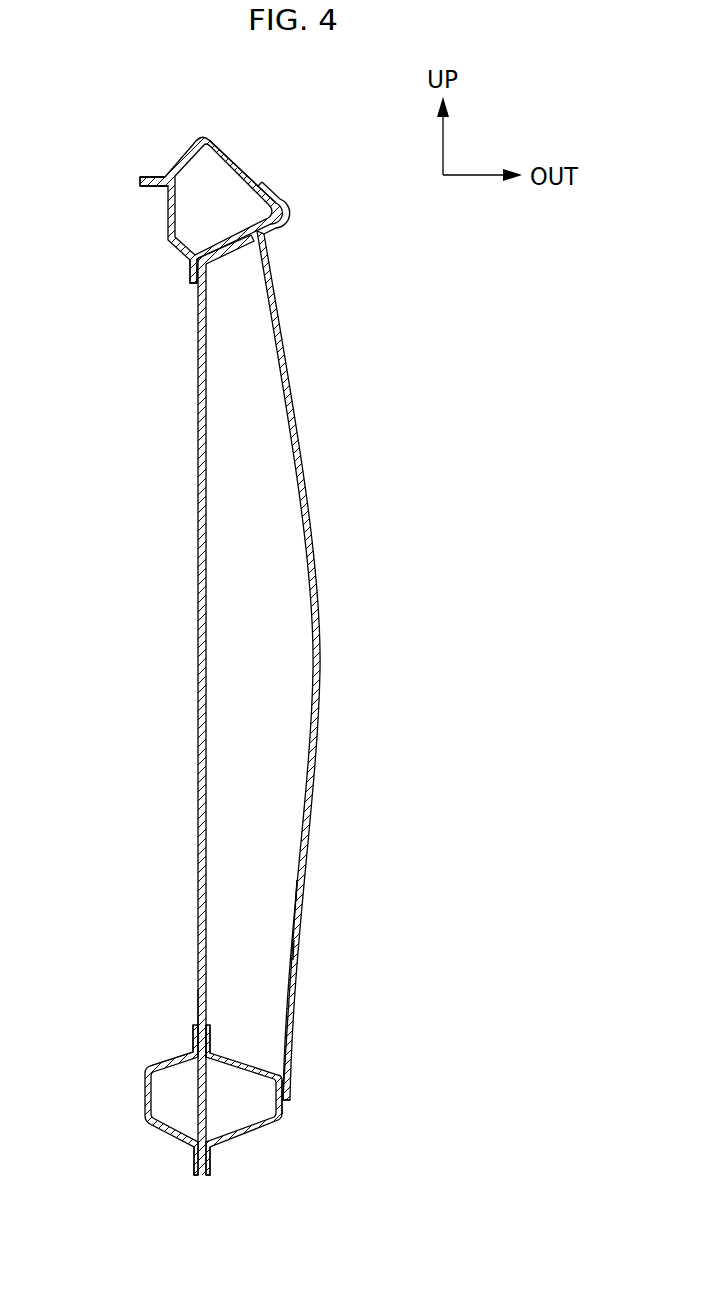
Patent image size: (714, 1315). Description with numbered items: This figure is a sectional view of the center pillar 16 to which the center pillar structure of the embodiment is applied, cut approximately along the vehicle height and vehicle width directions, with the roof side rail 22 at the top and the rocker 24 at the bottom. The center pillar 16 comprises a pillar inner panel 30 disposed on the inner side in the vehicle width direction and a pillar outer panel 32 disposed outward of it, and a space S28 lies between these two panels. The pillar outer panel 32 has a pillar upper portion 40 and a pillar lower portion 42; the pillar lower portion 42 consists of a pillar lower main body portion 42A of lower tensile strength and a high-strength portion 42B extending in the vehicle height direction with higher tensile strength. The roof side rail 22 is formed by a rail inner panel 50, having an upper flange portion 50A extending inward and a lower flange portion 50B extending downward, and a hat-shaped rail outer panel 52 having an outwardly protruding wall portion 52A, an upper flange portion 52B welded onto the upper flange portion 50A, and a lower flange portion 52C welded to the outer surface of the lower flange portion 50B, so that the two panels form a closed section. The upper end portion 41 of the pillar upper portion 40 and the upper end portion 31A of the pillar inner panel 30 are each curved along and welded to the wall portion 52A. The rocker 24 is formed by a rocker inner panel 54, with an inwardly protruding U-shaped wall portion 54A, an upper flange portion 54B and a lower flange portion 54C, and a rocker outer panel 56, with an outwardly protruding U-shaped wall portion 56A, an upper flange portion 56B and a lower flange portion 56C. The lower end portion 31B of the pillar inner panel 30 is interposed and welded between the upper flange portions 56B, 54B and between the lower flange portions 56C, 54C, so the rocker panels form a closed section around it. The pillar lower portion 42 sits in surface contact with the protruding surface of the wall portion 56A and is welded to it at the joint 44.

The center pillar 16 is at (250, 625).
The roof side rail 22 is at (197, 214).
The rocker 24 is at (214, 1089).
The pillar inner panel 30 is at (191, 705).
The upper end portion 31A is at (212, 262).
The lower end portion 31B is at (199, 1005).
The pillar outer panel 32 is at (308, 645).
The pillar upper portion 40 is at (300, 645).
The upper end portion 41 is at (283, 214).
The pillar lower portion 42 is at (300, 978).
The pillar lower main body portion 42A is at (293, 902).
The high-strength portion 42B is at (289, 960).
The joint 44 is at (325, 1093).
The rail inner panel 50 is at (197, 227).
The upper flange portion 50A is at (148, 187).
The lower flange portion 50B is at (188, 274).
The rail outer panel 52 is at (218, 227).
The wall portion 52A is at (246, 170).
The upper flange portion 52B is at (150, 177).
The lower flange portion 52C is at (195, 284).
The rocker inner panel 54 is at (134, 1093).
The wall portion 54A is at (158, 1062).
The upper flange portion 54B is at (193, 1040).
The lower flange portion 54C is at (192, 1163).
The rocker outer panel 56 is at (290, 1089).
The wall portion 56A is at (285, 1116).
The upper flange portion 56B is at (210, 1038).
The lower flange portion 56C is at (212, 1165).
The space between inner panel and outer reinforcement S28 is at (347, 905).